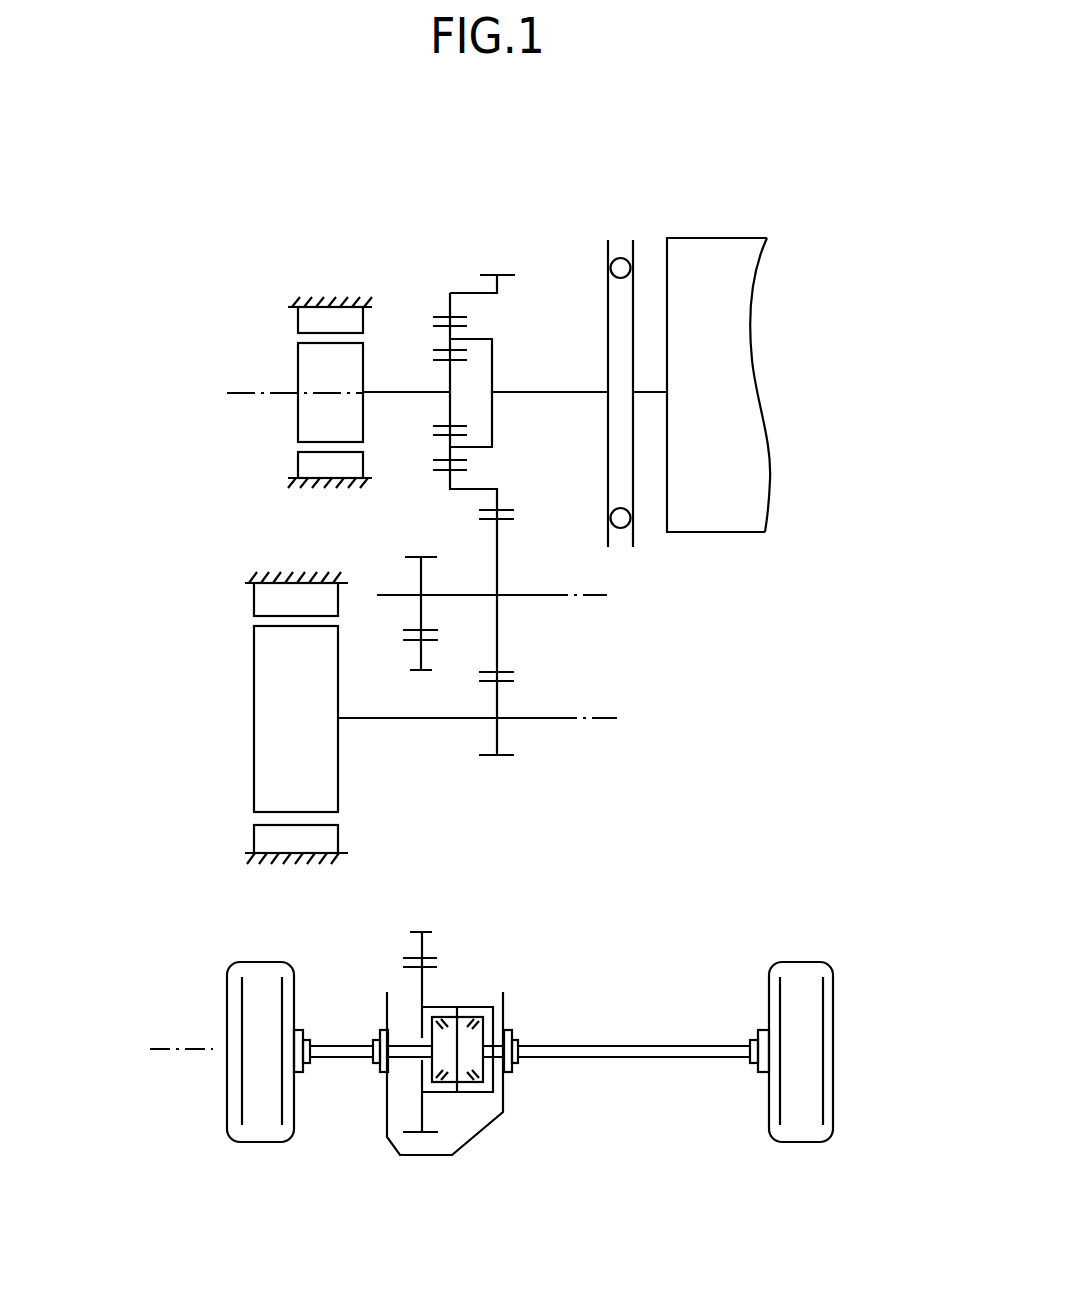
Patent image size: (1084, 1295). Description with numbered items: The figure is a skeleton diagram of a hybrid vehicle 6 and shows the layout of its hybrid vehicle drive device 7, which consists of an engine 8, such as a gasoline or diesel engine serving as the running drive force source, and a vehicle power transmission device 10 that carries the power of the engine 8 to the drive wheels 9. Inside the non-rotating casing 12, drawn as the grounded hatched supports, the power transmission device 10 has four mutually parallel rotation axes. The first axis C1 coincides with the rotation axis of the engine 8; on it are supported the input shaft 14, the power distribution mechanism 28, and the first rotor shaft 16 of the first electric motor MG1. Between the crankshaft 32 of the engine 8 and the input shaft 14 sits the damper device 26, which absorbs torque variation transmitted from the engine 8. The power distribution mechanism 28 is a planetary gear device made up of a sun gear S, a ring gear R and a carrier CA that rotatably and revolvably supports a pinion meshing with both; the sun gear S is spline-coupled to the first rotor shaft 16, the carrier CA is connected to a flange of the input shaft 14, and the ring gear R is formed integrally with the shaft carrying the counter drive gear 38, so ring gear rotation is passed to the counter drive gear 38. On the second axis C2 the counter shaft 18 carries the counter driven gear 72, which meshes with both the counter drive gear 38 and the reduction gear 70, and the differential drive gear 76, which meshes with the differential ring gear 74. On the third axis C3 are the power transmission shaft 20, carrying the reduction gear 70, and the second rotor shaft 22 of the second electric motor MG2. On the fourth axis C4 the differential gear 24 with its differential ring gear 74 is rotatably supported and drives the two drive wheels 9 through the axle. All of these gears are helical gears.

The hybrid vehicle 6 is at (404, 178).
The hybrid vehicle drive device 7 is at (815, 210).
The engine 8 is at (726, 243).
The drive wheels 9 is at (255, 968).
The vehicle power transmission device 10 is at (320, 208).
The casing 12 is at (320, 297).
The input shaft 14 is at (540, 393).
The first rotor shaft 16 is at (370, 395).
The counter shaft 18 is at (442, 596).
The power transmission shaft 20 is at (521, 718).
The second rotor shaft 22 is at (349, 718).
The differential gear 24 is at (473, 1110).
The damper device 26 is at (625, 212).
The power distribution mechanism 28 is at (450, 280).
The crankshaft 32 is at (650, 392).
The counter drive gear 38 is at (508, 512).
The reduction gear 70 is at (488, 757).
The counter driven gear 72 is at (512, 520).
The differential ring gear 74 is at (410, 644).
The differential drive gear 76 is at (412, 630).
The first electric motor MG1 is at (277, 350).
The second electric motor MG2 is at (238, 655).
The ring gear R is at (442, 313).
The sun gear S is at (438, 360).
The carrier CA is at (477, 343).
The first axis C1 is at (252, 393).
The second axis C2 is at (618, 598).
The third axis C3 is at (628, 720).
The fourth axis C4 is at (158, 1049).